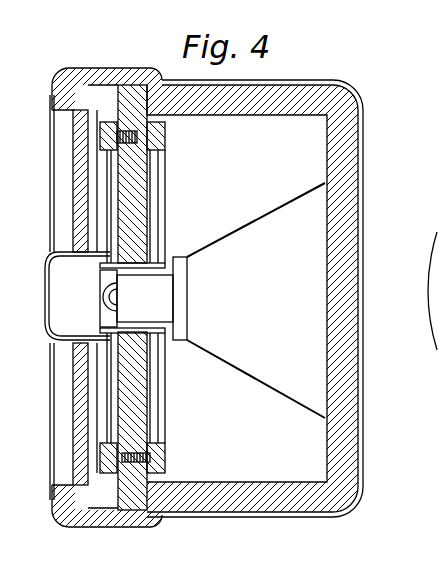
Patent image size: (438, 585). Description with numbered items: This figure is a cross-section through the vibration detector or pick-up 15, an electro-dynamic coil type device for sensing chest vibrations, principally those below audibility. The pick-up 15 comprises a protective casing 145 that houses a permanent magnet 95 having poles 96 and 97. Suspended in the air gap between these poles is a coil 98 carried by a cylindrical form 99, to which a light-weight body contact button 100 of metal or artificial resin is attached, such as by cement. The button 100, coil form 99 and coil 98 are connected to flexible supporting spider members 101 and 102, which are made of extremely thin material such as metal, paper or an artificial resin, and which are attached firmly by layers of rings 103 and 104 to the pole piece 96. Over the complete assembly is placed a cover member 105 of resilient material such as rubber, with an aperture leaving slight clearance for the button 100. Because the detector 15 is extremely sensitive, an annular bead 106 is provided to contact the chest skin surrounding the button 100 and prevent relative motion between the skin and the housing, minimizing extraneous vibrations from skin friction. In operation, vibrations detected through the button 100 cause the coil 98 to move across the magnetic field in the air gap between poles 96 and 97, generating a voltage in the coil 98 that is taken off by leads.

The pick-up 15 is at (365, 143).
The permanent magnet 95 is at (283, 213).
The pole piece 96 is at (140, 218).
The pole 97 is at (163, 312).
The coil 98 is at (150, 243).
The cylindrical form 99 is at (100, 275).
The body contact button 100 is at (46, 323).
The flexible supporting spider member 101 is at (108, 185).
The flexible supporting spider member 102 is at (162, 172).
The ring 103 is at (102, 461).
The ring 104 is at (167, 137).
The cover member 105 is at (75, 413).
The annular bead 106 is at (53, 95).
The protective casing 145 is at (248, 517).